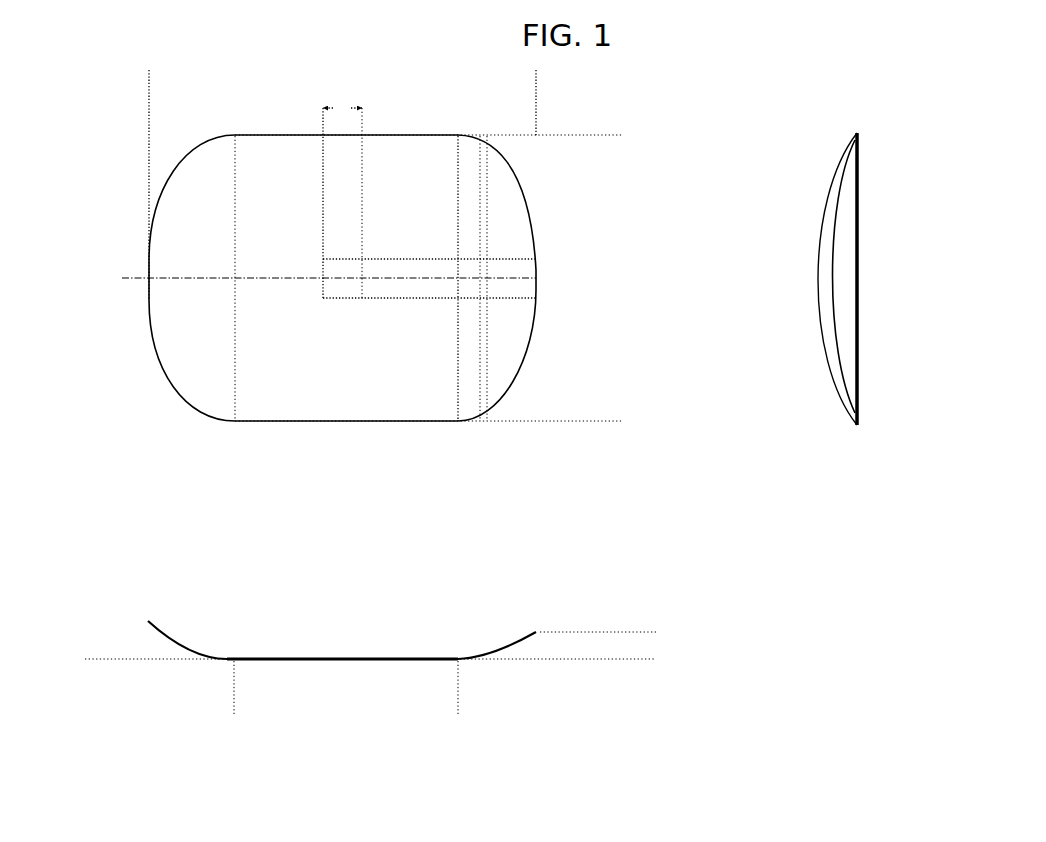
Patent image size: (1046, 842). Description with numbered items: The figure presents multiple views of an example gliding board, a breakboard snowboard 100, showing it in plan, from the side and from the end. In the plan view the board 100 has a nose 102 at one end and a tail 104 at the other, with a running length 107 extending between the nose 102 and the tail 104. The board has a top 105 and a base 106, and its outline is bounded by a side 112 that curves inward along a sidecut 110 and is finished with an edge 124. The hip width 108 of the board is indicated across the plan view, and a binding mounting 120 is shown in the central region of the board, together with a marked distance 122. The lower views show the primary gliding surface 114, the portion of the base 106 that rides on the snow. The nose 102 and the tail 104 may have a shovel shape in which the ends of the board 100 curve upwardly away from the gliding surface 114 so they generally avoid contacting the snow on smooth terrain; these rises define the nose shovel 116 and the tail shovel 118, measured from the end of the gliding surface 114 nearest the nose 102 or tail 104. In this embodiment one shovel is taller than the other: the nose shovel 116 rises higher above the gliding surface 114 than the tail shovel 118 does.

The breakboard snowboard 100 is at (126, 219).
The nose 102 is at (147, 288).
The tail 104 is at (536, 330).
The top 105 is at (469, 655).
The base 106 is at (440, 662).
The running length 107 is at (149, 76).
The hip width 108 is at (589, 136).
The sidecut 110 is at (347, 424).
The side 112 is at (245, 424).
The primary gliding surface 114 is at (234, 712).
The nose shovel 116 is at (89, 621).
The tail shovel 118 is at (650, 603).
The binding mounting 120 is at (366, 257).
The offset distance 122 is at (149, 108).
The edge 124 is at (181, 398).